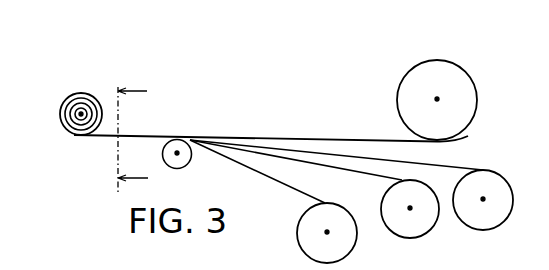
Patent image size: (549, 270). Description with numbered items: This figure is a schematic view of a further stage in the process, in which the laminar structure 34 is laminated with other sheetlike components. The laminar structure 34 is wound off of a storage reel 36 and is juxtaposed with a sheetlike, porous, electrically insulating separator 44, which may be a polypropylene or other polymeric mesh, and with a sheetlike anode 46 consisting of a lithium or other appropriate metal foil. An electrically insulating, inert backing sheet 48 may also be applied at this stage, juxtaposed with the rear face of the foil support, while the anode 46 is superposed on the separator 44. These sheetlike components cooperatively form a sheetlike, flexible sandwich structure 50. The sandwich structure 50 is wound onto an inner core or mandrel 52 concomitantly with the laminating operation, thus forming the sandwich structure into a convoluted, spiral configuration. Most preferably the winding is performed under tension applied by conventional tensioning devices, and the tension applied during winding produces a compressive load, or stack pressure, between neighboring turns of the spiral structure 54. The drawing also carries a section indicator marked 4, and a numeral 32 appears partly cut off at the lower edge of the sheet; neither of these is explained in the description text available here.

The section line indicator for FIG. 4 is at (135, 139).
The web material 32 is at (162, 266).
The laminar structure 34 is at (361, 172).
The storage reel 36 is at (437, 218).
The separator 44 is at (445, 165).
The anode 46 is at (312, 136).
The backing sheet 48 is at (293, 189).
The sandwich structure 50 is at (113, 138).
The inner core 52 is at (80, 110).
The spiral structure 54 is at (61, 113).